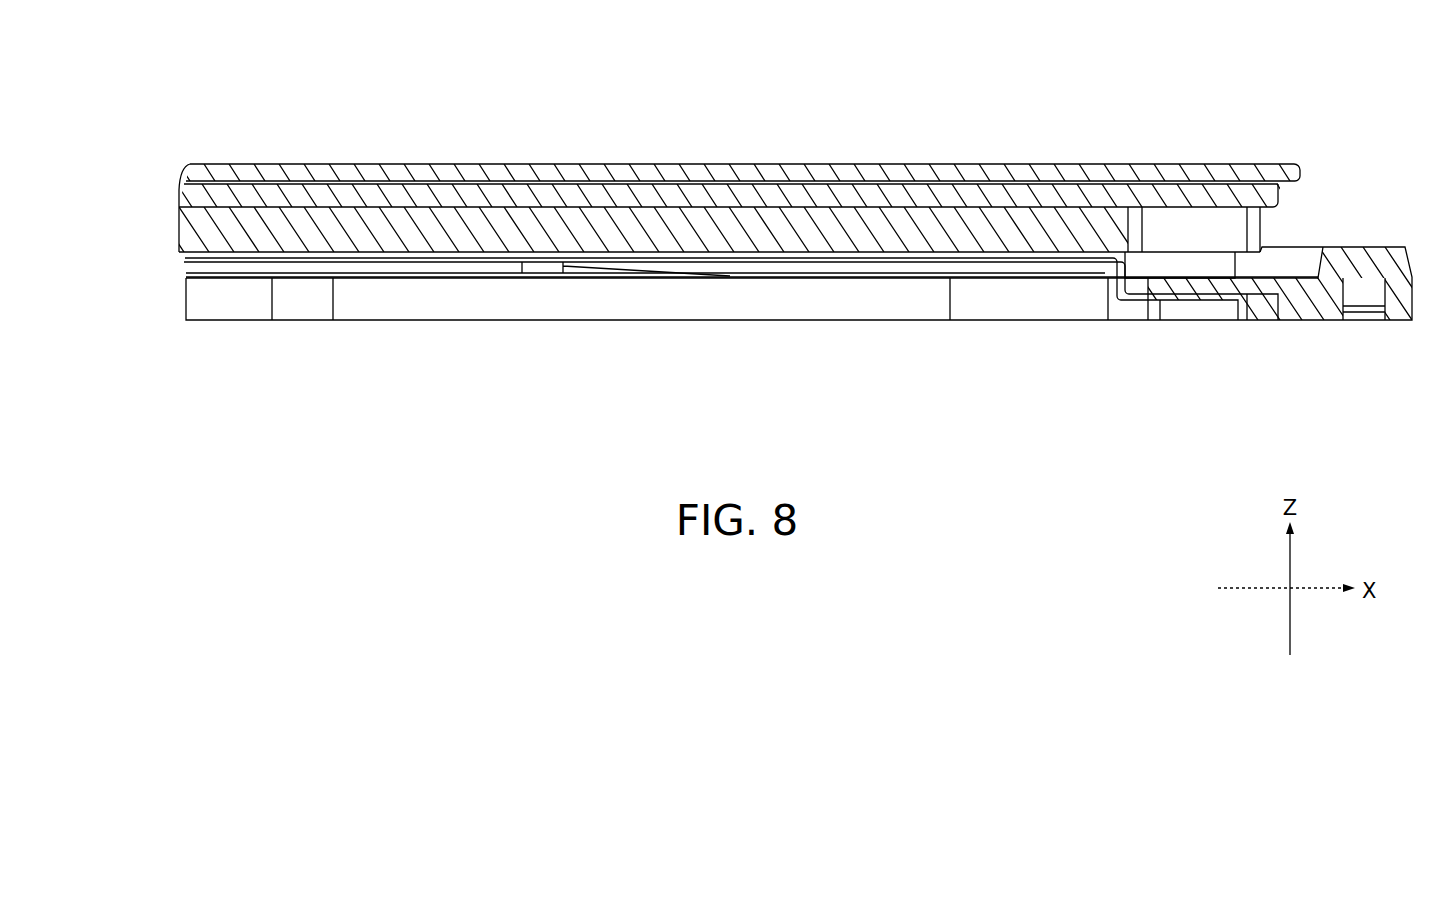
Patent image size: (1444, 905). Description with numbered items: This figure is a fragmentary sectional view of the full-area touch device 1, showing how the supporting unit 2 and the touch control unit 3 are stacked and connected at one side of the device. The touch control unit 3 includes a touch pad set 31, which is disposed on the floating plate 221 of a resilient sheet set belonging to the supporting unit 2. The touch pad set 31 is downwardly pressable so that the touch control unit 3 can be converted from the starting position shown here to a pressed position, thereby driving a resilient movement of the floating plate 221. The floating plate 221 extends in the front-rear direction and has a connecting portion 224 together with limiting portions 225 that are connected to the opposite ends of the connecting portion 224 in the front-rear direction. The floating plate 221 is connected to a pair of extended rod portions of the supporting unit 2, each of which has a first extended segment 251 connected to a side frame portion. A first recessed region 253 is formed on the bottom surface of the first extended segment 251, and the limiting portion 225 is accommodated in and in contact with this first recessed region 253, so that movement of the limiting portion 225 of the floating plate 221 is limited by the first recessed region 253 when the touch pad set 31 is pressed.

The full-area touch device 1 is at (864, 132).
The supporting unit 2 is at (1410, 228).
The touch control unit 3 is at (206, 152).
The touch pad set 31 is at (170, 163).
The floating plate 221 is at (172, 260).
The connecting portion 224 is at (433, 258).
The limiting portion 225 is at (1160, 300).
The first extended segment 251 is at (1178, 285).
The first recessed region 253 is at (1261, 318).